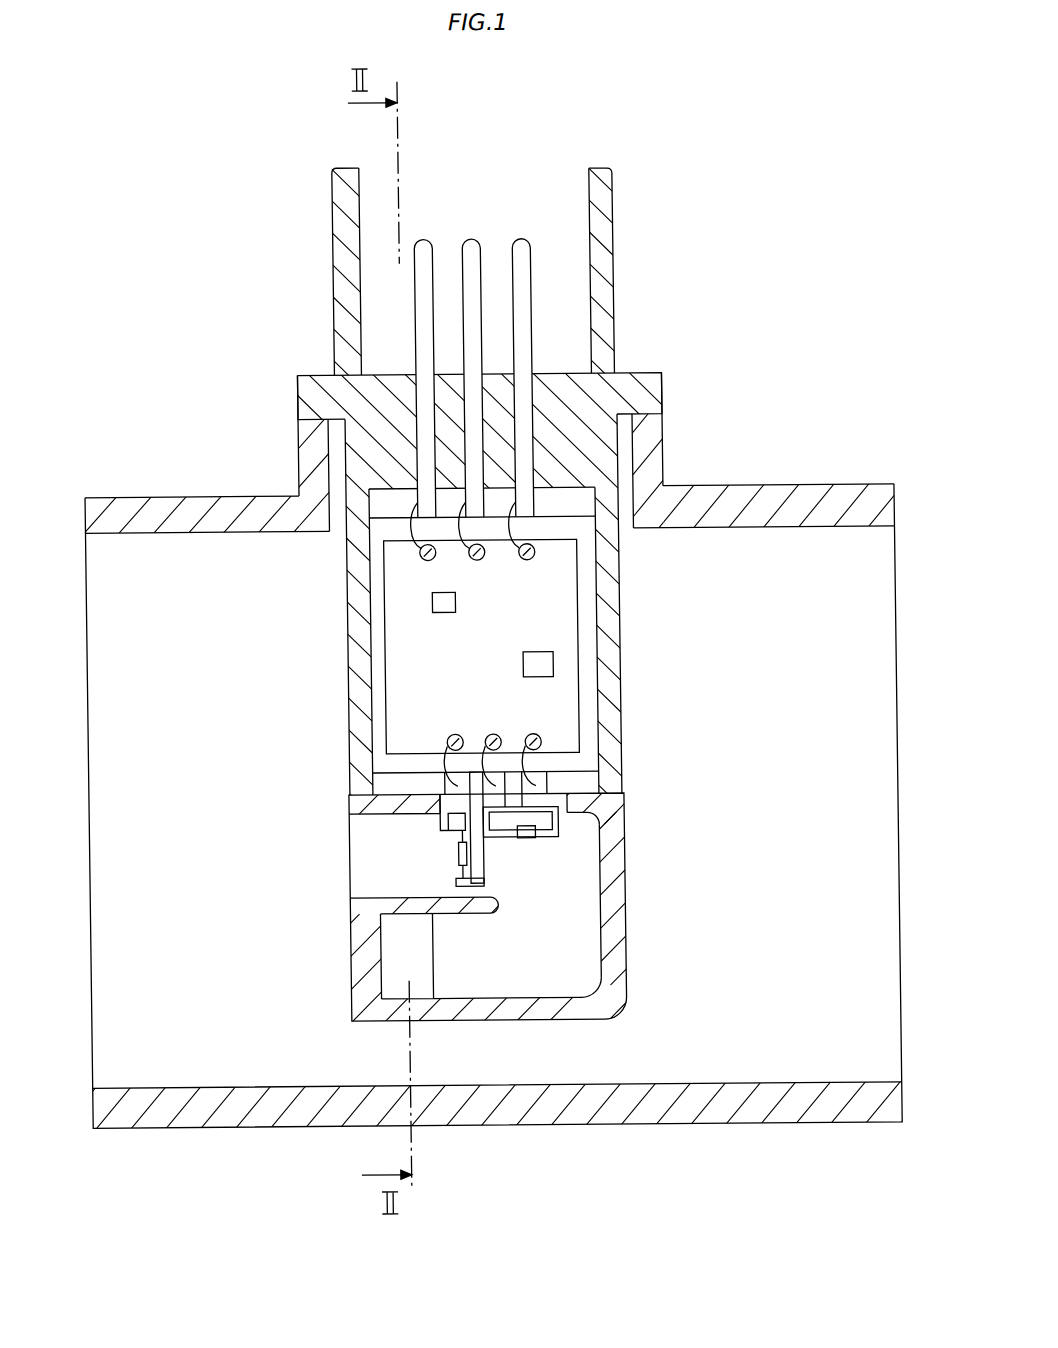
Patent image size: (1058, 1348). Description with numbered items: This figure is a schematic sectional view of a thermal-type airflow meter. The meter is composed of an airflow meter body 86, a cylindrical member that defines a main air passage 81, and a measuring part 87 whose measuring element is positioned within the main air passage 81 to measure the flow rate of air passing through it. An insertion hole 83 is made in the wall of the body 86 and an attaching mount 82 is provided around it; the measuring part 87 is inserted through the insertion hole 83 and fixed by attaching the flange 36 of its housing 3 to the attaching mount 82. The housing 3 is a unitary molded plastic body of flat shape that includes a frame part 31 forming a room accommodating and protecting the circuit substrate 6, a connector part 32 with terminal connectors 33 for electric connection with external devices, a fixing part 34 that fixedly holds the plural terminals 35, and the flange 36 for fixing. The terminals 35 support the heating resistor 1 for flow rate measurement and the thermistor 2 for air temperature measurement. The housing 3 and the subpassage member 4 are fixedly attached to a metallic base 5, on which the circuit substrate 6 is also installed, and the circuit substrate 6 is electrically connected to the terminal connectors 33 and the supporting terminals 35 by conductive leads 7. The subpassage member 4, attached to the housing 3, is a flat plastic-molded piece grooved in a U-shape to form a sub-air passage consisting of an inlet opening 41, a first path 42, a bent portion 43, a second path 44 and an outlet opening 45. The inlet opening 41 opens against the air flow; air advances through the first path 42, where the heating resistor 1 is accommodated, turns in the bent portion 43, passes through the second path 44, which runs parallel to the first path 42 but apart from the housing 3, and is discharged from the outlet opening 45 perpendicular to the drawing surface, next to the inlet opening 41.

The heating resistor 1 is at (453, 852).
The thermistor 2 is at (537, 835).
The housing 3 is at (529, 443).
The subpassage member 4 is at (478, 986).
The metallic base 5 is at (582, 762).
The circuit substrate 6 is at (530, 692).
The conductive leads 7 is at (430, 512).
The frame part 31 is at (603, 622).
The connector part 32 is at (600, 262).
The terminal connectors 33 is at (523, 240).
The fixing part 34 is at (398, 787).
The terminals 35 is at (438, 825).
The flange 36 is at (648, 375).
The inlet opening 41 is at (349, 833).
The first path 42 is at (352, 962).
The bent portion 43 is at (563, 920).
The second path 44 is at (482, 972).
The outlet opening 45 is at (397, 980).
The main air passage 81 is at (108, 592).
The attaching mount 82 is at (298, 405).
The insertion hole 83 is at (623, 467).
The airflow meter body 86 is at (232, 498).
The measuring part 87 is at (462, 168).